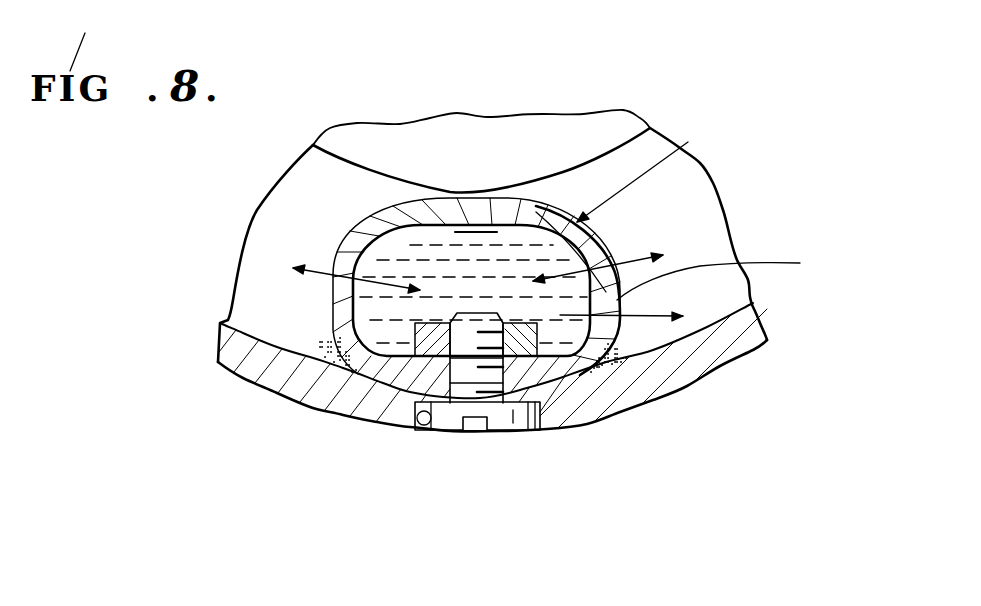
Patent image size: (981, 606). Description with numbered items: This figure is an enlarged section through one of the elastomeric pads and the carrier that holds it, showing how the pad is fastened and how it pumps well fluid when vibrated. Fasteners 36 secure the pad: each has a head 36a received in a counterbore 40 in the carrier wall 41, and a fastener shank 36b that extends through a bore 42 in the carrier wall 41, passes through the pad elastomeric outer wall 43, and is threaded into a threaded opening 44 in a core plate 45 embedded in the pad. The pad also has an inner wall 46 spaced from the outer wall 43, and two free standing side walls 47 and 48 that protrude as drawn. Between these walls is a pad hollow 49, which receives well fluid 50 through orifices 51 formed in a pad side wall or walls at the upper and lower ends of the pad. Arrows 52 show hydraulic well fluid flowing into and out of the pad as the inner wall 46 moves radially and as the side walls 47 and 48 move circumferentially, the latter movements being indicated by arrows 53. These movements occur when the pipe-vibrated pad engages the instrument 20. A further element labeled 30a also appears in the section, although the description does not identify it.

The instrument 20 is at (580, 122).
The chamber wall 30a is at (678, 139).
The fasteners 36 is at (444, 432).
The head 36a is at (507, 427).
The fastener shank 36b is at (513, 363).
The counterbore 40 is at (437, 430).
The carrier wall 41 is at (262, 389).
The bore 42 is at (457, 433).
The pad elastomeric outer wall 43 is at (380, 360).
The threaded opening 44 is at (452, 323).
The core plate 45 is at (350, 313).
The inner wall 46 is at (512, 215).
The side wall 47 is at (357, 257).
The side wall 48 is at (590, 247).
The pad hollow 49 is at (524, 266).
The well fluid 50 is at (422, 228).
The orifices 51 is at (727, 271).
The arrows 52 is at (648, 318).
The arrows 53 is at (310, 268).